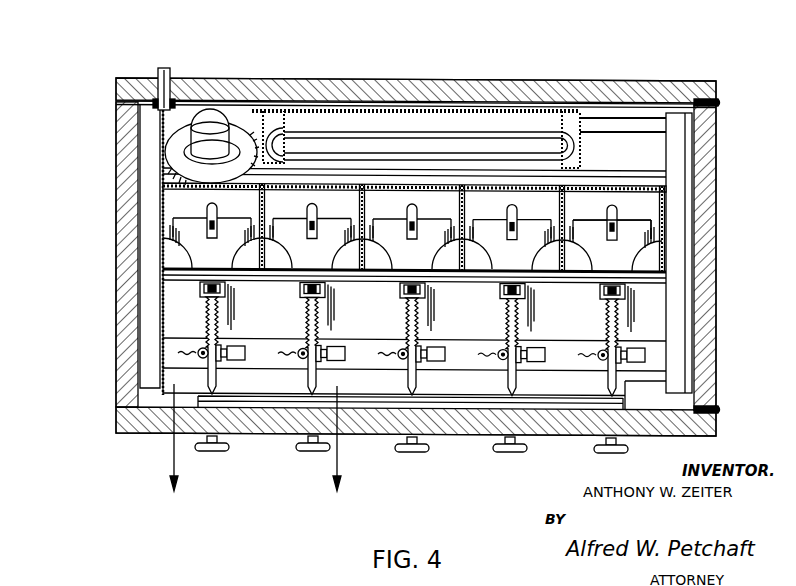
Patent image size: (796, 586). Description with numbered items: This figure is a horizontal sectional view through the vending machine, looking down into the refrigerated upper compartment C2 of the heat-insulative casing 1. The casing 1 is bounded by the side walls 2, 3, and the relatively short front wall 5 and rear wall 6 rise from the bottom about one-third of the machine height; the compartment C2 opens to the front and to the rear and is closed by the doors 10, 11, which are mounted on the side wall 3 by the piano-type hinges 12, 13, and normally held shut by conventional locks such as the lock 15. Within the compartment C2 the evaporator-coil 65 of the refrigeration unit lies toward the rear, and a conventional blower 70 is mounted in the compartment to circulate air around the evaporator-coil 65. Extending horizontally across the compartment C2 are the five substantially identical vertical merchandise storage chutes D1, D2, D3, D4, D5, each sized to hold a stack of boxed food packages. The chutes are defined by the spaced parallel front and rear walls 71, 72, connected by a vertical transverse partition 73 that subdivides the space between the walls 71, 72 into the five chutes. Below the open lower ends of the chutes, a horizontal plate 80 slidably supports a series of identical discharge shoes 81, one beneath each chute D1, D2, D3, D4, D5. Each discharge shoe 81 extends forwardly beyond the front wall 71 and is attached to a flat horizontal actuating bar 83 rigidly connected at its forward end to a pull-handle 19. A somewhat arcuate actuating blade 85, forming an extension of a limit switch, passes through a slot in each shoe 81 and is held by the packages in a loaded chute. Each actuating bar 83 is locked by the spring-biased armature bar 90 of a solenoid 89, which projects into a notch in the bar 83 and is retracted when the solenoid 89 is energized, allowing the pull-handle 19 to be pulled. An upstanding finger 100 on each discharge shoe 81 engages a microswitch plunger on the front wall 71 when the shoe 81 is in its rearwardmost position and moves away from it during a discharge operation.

The casing 1 is at (715, 322).
The side wall 2 is at (118, 203).
The side wall 3 is at (703, 230).
The front wall 5 is at (255, 450).
The rear wall 6 is at (382, 80).
The door 10 is at (636, 440).
The door 11 is at (655, 83).
The piano-type hinge 12 is at (718, 411).
The piano-type hinge 13 is at (718, 103).
The lock 15 is at (168, 70).
The pull-handle 19 is at (594, 453).
The evaporator-coil 65 is at (442, 130).
The blower 70 is at (215, 108).
The front wall 71 is at (190, 260).
The rear wall 72 is at (196, 187).
The vertical transverse partition 73 is at (260, 236).
The horizontal plate 80 is at (645, 259).
The discharge shoe 81 is at (200, 250).
The actuating bar 83 is at (207, 316).
The actuating blade 85 is at (215, 210).
The solenoid 89 is at (243, 352).
The armature bar 90 is at (222, 350).
The finger 100 is at (220, 286).
The merchandise storage chute D1 is at (180, 275).
The merchandise storage chute D2 is at (335, 203).
The merchandise storage chute D3 is at (385, 200).
The merchandise storage chute D4 is at (492, 223).
The merchandise storage chute D5 is at (583, 207).
The upper compartment C2 is at (610, 145).